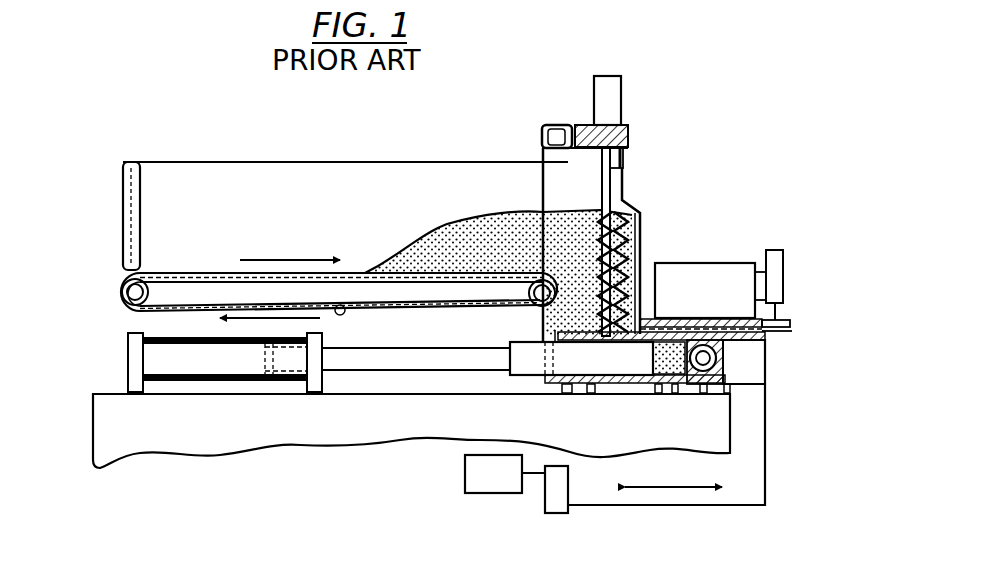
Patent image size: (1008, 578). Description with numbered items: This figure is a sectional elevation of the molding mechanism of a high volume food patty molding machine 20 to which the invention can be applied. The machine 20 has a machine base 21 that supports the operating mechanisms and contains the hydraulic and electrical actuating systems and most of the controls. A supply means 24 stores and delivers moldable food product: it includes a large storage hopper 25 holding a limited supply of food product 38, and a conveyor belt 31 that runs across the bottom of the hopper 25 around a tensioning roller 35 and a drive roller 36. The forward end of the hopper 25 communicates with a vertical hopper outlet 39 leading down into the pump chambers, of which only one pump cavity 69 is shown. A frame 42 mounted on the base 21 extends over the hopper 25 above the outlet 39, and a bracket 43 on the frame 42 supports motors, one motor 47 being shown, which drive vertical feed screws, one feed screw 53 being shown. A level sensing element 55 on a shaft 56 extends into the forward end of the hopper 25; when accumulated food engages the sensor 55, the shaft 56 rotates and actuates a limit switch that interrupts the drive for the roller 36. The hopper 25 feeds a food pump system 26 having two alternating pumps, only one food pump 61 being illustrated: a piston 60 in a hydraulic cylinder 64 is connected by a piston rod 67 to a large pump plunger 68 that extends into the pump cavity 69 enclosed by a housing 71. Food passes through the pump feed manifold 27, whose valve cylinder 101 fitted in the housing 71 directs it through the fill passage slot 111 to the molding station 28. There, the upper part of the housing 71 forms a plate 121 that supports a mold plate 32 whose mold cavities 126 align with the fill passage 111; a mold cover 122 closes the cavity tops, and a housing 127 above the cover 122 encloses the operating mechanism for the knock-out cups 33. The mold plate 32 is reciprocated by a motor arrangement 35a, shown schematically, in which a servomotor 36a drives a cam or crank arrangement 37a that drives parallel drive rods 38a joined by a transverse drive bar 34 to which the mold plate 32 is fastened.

The food patty molding machine 20 is at (680, 150).
The machine base 21 is at (133, 446).
The supply means 24 is at (592, 124).
The food product storage hopper 25 is at (195, 170).
The food pump system 26 is at (452, 384).
The pump feed manifold 27 is at (702, 396).
The molding station 28 is at (722, 262).
The conveyor belt 31 is at (208, 272).
The mold plate 32 is at (792, 332).
The knock-out cups 33 is at (783, 320).
The transverse drive bar 34 is at (766, 455).
The tensioning roller 35 is at (120, 288).
The motor arrangement 35a is at (520, 510).
The drive roller 36 is at (535, 305).
The servomotor 36a is at (465, 480).
The cam or crank arrangement 37a is at (565, 513).
The food product 38 is at (400, 262).
The parallel drive rods 38a is at (708, 507).
The vertical hopper outlet 39 is at (545, 247).
The frame 42 is at (548, 128).
The bracket 43 is at (626, 130).
The motor 47 is at (612, 100).
The feed screw 53 is at (640, 224).
The sensing element 55 is at (602, 188).
The shaft 56 is at (597, 148).
The piston 60 is at (267, 376).
The food pump 61 is at (325, 345).
The hydraulic cylinder 64 is at (205, 381).
The piston rod 67 is at (358, 362).
The pump plunger 68 is at (532, 378).
The pump cavity 69 is at (658, 376).
The housing 71 is at (592, 386).
The valve cylinder 101 is at (728, 358).
The fill passage slot 111 is at (723, 342).
The support plate 121 is at (768, 328).
The mold cover 122 is at (676, 318).
The mold cavities 126 is at (703, 342).
The housing 127 is at (760, 250).